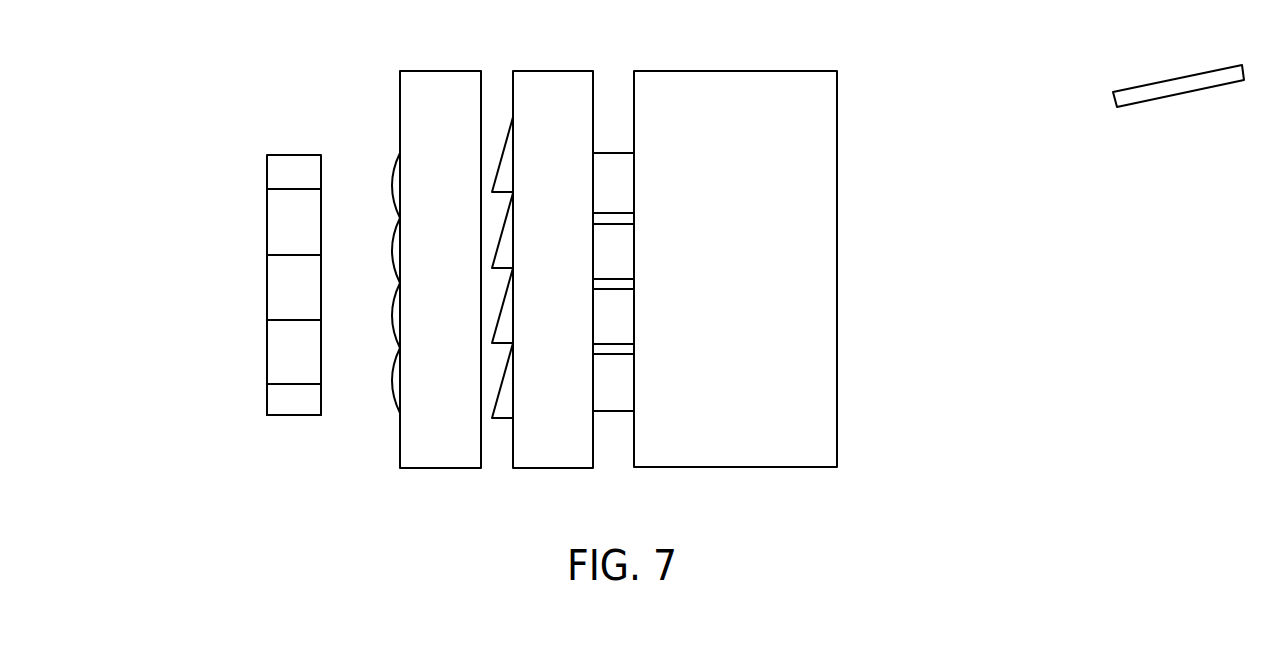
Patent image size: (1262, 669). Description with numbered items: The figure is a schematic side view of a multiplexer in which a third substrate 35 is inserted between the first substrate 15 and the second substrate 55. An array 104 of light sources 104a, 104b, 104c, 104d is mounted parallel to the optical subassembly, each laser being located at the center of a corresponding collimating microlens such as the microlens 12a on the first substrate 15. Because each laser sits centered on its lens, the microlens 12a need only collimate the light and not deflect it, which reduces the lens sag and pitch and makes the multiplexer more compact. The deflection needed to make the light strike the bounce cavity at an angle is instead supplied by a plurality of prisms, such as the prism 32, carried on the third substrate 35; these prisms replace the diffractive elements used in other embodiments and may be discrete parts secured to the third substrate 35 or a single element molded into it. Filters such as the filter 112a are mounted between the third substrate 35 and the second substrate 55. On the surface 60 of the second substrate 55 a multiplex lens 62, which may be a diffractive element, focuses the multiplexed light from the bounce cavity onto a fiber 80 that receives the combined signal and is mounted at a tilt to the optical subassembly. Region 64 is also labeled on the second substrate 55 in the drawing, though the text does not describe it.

The array of light sources 104 is at (258, 148).
The light source 104a is at (267, 189).
The light source 104b is at (267, 255).
The light source 104c is at (267, 320).
The light source 104d is at (267, 384).
The microlens 12a is at (393, 167).
The first substrate 15 is at (452, 210).
The prism 32 is at (502, 127).
The third substrate 35 is at (572, 291).
The filter 112a is at (617, 153).
The second substrate 55 is at (740, 210).
The multiplex lens 62 is at (837, 112).
The output surface 64 is at (837, 280).
The surface 60 is at (837, 385).
The fiber 80 is at (1155, 82).